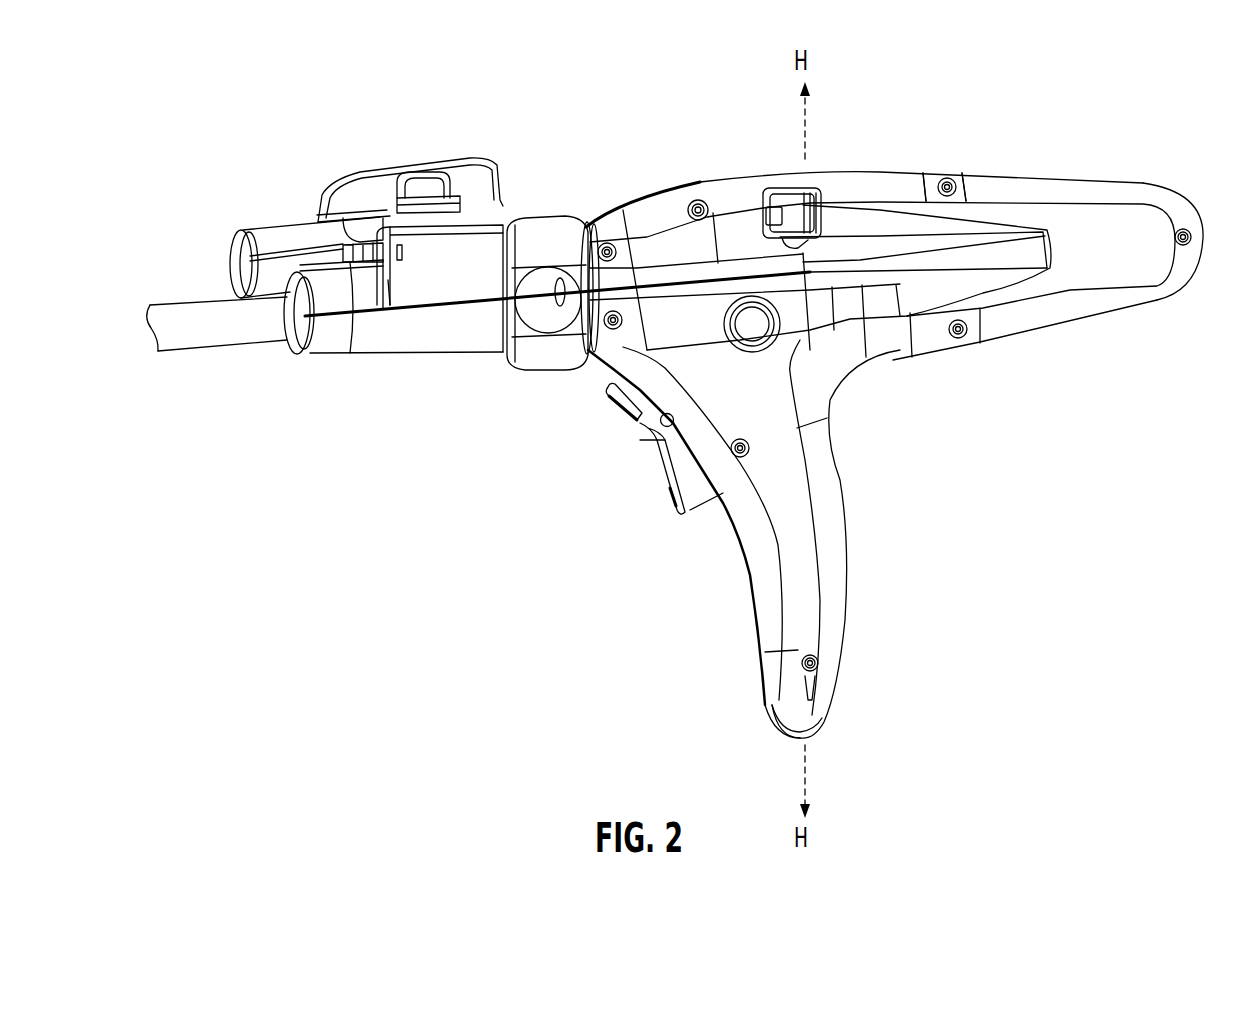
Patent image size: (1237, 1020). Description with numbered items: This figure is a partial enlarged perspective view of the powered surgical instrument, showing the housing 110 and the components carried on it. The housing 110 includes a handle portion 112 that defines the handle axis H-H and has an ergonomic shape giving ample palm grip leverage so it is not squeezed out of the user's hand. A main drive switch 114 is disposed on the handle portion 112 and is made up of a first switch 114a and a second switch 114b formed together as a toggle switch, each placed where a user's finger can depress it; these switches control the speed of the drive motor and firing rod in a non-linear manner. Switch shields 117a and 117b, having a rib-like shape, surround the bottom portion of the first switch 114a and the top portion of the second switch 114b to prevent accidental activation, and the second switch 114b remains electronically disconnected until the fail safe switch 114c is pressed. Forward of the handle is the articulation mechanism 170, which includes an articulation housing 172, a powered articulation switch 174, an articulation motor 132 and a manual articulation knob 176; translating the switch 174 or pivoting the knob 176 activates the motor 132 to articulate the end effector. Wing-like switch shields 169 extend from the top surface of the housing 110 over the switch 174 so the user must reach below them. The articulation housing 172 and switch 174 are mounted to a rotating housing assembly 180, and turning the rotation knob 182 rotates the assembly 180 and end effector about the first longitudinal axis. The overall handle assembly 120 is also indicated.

The housing 110 is at (1083, 268).
The handle portion 112 is at (848, 540).
The main drive switch 114 is at (607, 462).
The first switch 114a is at (672, 503).
The second switch 114b is at (612, 405).
The fail safe switch 114c is at (757, 327).
The switch shield 117a is at (592, 377).
The switch shield 117b is at (715, 527).
The handle assembly 120 is at (859, 412).
The articulation motor 132 is at (278, 222).
The switch shields 169 is at (817, 172).
The articulation mechanism 170 is at (409, 157).
The articulation housing 172 is at (389, 343).
The powered articulation switch 174 is at (790, 178).
The manual articulation knob 176 is at (415, 125).
The rotating housing assembly 180 is at (552, 200).
The rotation knob 182 is at (533, 195).